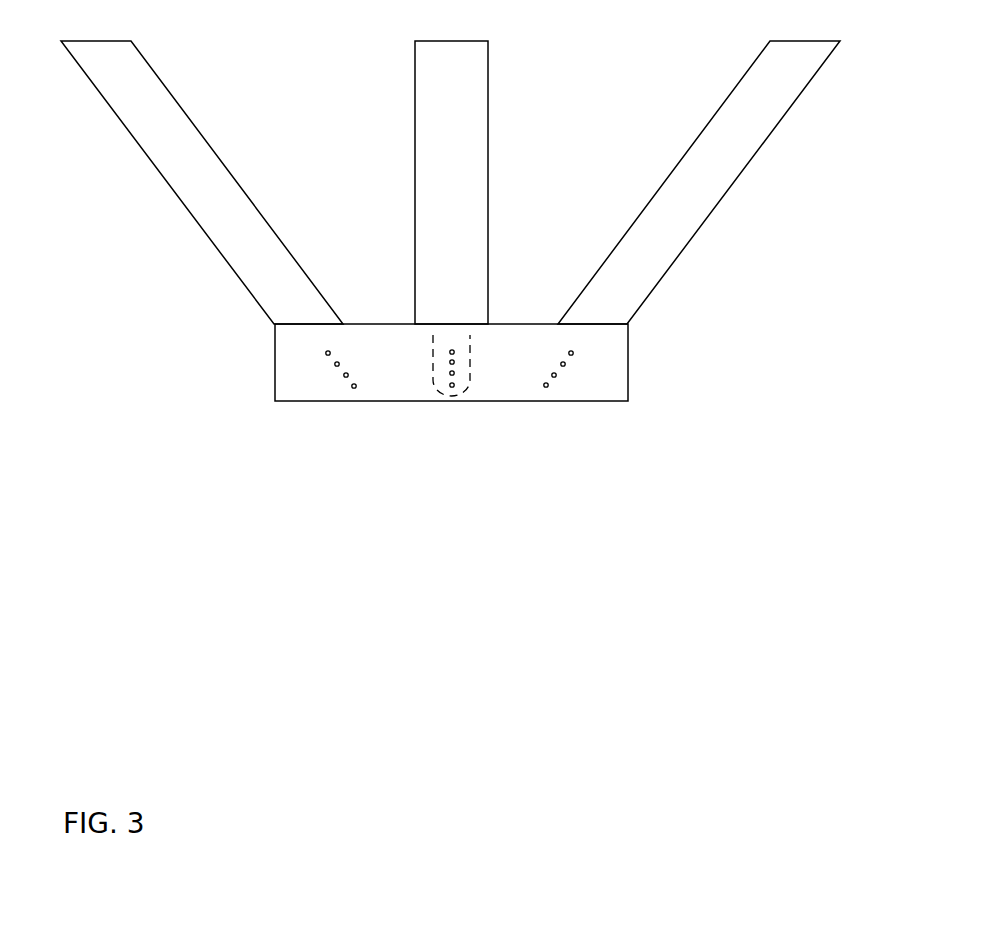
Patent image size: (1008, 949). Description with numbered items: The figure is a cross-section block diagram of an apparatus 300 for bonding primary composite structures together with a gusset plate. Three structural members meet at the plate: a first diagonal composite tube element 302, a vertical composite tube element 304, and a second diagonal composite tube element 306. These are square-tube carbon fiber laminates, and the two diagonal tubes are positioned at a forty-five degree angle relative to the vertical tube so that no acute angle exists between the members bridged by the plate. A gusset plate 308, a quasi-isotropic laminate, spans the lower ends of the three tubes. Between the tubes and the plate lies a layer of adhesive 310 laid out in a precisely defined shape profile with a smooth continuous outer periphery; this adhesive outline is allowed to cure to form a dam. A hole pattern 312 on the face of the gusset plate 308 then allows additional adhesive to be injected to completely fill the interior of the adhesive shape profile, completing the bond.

The apparatus 300 is at (777, 783).
The first diagonal composite tube element 302 is at (179, 116).
The vertical composite tube element 304 is at (475, 147).
The second diagonal composite tube element 306 is at (723, 169).
The gusset plate 308 is at (328, 403).
The layer of adhesive 310 is at (459, 398).
The hole pattern 312 is at (557, 377).